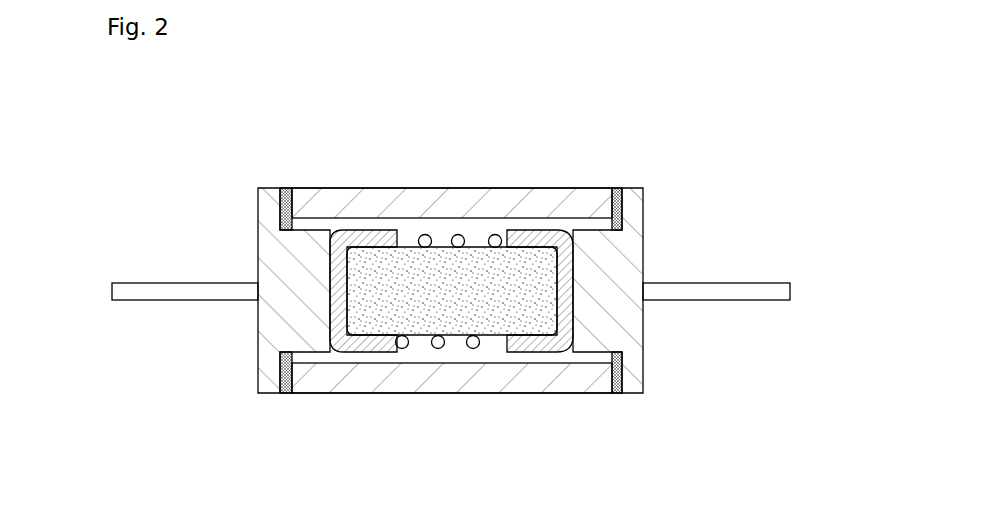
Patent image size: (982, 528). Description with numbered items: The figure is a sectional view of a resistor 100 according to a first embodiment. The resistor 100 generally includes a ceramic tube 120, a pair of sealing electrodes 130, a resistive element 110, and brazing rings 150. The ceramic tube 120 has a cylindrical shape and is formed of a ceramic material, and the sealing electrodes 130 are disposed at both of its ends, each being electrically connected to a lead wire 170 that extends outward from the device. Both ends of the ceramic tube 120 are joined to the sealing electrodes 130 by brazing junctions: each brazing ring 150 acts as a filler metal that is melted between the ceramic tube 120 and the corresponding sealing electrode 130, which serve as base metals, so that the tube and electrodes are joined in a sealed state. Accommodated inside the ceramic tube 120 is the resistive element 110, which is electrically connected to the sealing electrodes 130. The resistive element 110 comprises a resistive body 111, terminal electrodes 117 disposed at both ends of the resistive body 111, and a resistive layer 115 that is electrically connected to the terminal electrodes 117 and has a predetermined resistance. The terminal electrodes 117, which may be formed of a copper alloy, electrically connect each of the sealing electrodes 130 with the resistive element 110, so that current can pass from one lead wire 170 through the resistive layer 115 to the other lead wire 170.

The resistor 100 is at (269, 78).
The resistive element 110 is at (550, 458).
The resistive body 111 is at (403, 349).
The resistive layer 115 is at (473, 349).
The terminal electrodes 117 is at (533, 352).
The ceramic tube 120 is at (432, 188).
The sealing electrodes 130 is at (641, 246).
The brazing rings 150 is at (618, 188).
The lead wires 170 is at (728, 290).